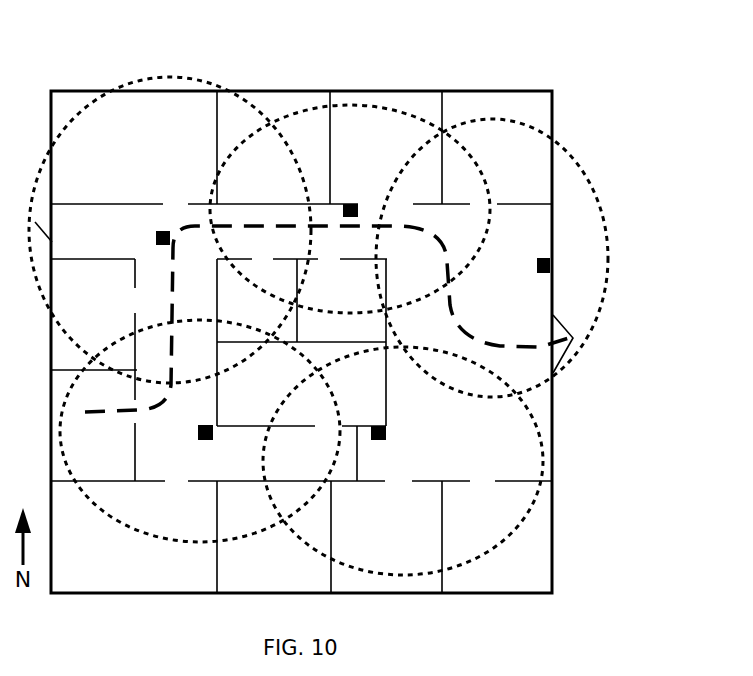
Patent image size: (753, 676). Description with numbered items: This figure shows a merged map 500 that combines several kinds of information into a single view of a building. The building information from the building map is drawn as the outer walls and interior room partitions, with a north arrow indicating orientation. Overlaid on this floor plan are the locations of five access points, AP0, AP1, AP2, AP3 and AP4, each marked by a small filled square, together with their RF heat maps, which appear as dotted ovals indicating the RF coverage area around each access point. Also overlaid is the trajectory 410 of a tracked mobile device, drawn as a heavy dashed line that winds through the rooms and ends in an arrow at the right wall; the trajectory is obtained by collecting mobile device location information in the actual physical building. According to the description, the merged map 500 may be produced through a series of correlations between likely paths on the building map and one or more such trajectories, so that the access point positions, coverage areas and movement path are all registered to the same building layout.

The merged map 500 is at (318, 309).
The trajectory 410 is at (577, 334).
The access point AP0 is at (176, 446).
The access point AP1 is at (141, 204).
The access point AP2 is at (356, 190).
The access point AP3 is at (521, 246).
The access point AP4 is at (400, 446).